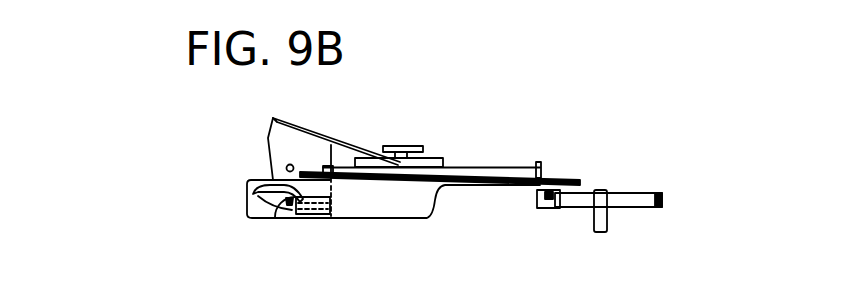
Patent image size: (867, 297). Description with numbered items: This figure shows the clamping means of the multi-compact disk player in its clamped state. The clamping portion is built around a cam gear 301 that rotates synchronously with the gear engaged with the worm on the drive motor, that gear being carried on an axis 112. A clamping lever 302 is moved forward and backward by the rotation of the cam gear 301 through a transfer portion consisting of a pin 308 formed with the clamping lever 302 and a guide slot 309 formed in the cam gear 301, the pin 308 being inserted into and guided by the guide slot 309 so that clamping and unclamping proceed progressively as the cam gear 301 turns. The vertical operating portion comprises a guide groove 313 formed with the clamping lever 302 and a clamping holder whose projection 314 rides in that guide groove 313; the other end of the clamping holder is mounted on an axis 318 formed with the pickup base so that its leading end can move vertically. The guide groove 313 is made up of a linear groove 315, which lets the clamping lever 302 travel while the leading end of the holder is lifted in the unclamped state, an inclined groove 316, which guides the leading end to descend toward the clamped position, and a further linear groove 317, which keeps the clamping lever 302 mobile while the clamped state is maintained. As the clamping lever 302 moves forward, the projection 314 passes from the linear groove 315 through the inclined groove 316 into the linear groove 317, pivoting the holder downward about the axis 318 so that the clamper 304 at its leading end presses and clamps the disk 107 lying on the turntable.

The cam gear 301 is at (635, 203).
The clamping lever 302 is at (428, 196).
The clamper 304 is at (410, 142).
The disk 107 is at (505, 166).
The pin 308 is at (549, 190).
The guide slot 309 is at (558, 208).
The axis 112 is at (602, 192).
The guide groove 313 is at (283, 205).
The projection 314 is at (320, 205).
The linear groove 315 is at (253, 191).
The inclined groove 316 is at (293, 205).
The linear groove 317 is at (333, 208).
The axis 318 is at (286, 168).